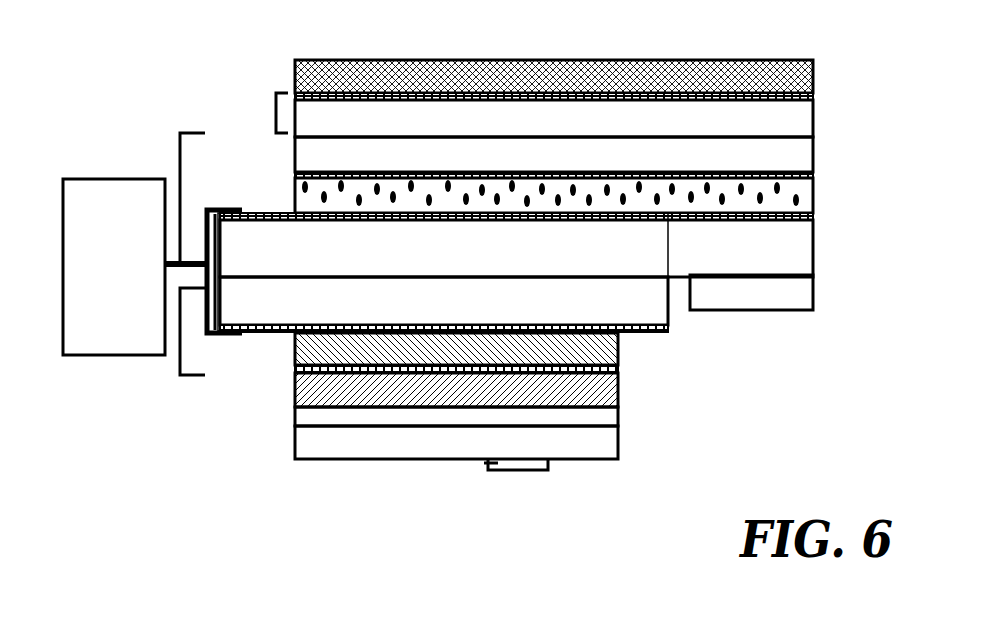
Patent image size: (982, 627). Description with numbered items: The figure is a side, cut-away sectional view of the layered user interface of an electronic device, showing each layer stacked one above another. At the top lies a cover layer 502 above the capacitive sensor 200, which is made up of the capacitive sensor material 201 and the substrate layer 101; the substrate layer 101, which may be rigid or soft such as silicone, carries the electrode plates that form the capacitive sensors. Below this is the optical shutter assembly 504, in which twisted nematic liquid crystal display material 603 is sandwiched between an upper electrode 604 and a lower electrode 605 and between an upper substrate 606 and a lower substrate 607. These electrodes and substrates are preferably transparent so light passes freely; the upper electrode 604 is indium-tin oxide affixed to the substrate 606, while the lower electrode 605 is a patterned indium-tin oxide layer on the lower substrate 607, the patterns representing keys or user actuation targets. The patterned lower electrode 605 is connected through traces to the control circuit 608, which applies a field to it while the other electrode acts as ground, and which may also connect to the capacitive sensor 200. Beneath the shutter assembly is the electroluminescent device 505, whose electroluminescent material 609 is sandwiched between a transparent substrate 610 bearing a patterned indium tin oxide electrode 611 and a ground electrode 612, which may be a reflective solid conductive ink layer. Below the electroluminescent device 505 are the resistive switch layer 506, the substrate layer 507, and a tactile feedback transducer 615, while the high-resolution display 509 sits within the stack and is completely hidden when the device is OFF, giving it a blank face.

The cover glass layer 502 is at (675, 70).
The capacitive sensor material 201 is at (807, 98).
The substrate layer 101 is at (807, 123).
The substrate 606 is at (807, 157).
The upper electrode 604 is at (295, 175).
The twisted nematic liquid crystal display material 603 is at (790, 201).
The lower electrode 605 is at (290, 212).
The lower substrate 607 is at (803, 244).
The transparent substrate 610 is at (660, 301).
The patterned electrode 611 is at (668, 326).
The high-resolution display 509 is at (803, 285).
The electroluminescent material 609 is at (606, 336).
The ground electrode 612 is at (295, 368).
The resistive switch layer 506 is at (605, 380).
The substrate layer 507 is at (610, 422).
The transducer 615 is at (488, 463).
The control circuit 608 is at (85, 200).
The optical shutter assembly 504 is at (180, 157).
The electroluminescent device 505 is at (178, 363).
The capacitive sensor 200 is at (276, 120).